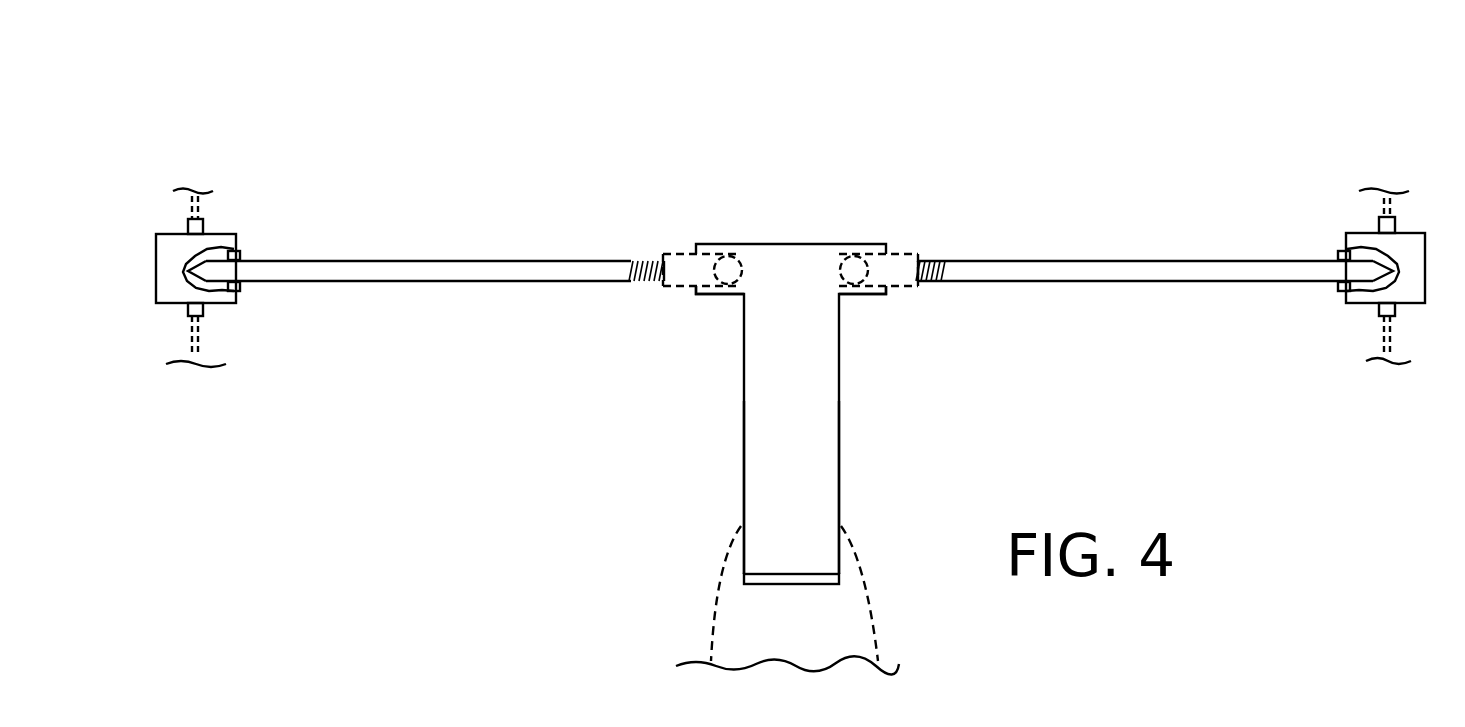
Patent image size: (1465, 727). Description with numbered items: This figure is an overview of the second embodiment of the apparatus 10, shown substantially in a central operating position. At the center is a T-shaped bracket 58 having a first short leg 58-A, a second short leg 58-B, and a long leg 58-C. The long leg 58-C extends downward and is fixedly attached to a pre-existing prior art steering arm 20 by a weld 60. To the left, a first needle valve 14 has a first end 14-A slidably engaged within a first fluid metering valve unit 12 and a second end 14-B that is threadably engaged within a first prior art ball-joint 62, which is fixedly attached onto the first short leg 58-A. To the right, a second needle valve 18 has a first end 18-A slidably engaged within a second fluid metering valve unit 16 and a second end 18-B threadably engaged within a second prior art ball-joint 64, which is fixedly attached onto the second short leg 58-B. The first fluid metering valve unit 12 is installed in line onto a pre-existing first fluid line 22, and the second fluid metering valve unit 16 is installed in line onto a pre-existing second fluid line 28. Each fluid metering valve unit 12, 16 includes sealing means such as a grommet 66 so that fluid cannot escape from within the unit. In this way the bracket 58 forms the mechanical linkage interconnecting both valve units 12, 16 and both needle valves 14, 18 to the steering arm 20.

The hitch assembly 10 is at (781, 163).
The first fluid metering valve unit 12 is at (165, 292).
The first needle valve 14 is at (440, 268).
The first end of first needle valve 14-A is at (212, 272).
The second end of first needle valve 14-B is at (652, 282).
The second fluid metering valve unit 16 is at (1417, 282).
The second needle valve 18 is at (1135, 268).
The first end of second needle valve 18-A is at (1330, 270).
The second end of second needle valve 18-B is at (927, 283).
The steering arm 20 is at (857, 653).
The first fluid line 22 is at (194, 190).
The second fluid line 28 is at (1387, 197).
The T-shaped bracket 58 is at (790, 278).
The first short leg 58-A is at (715, 288).
The second short leg 58-B is at (858, 288).
The long leg 58-C is at (808, 533).
The weld 60 is at (825, 580).
The first ball-joint 62 is at (692, 268).
The second ball-joint 64 is at (880, 268).
The grommet 66 is at (240, 252).